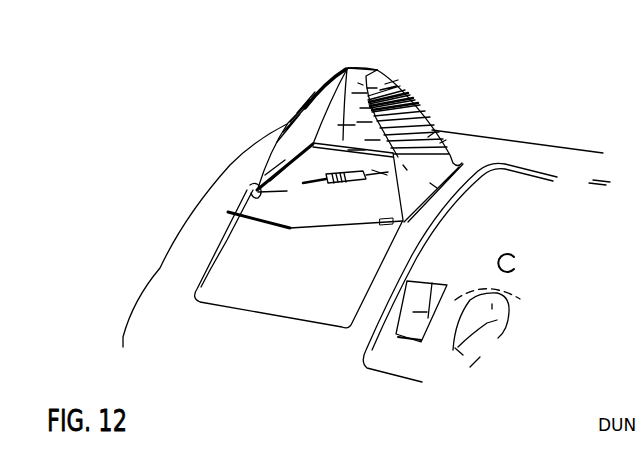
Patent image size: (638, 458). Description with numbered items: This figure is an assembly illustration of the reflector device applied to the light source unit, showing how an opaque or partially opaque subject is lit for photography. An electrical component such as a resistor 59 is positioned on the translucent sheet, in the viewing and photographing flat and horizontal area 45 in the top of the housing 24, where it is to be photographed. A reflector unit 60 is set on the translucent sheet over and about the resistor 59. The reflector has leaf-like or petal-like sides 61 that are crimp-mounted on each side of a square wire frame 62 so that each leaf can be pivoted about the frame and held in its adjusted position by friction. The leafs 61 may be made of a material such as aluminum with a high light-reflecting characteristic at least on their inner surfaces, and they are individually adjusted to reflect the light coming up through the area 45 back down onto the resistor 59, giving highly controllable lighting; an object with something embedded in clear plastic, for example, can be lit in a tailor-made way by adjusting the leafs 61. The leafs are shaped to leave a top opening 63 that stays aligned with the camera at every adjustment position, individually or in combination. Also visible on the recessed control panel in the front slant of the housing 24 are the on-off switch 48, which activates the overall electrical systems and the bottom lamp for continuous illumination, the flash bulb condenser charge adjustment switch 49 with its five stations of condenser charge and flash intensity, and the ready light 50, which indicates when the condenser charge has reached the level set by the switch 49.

The housing 24 is at (177, 243).
The viewing and photographing flat and horizontal area 45 is at (253, 188).
The on-off switch 48 is at (396, 334).
The flash bulb condenser charge adjustment switch 49 is at (497, 328).
The ready light 50 is at (520, 256).
The resistor 59 is at (338, 175).
The reflector unit 60 is at (400, 66).
The reflector leafs 61 is at (284, 123).
The square wire frame 62 is at (330, 72).
The top opening 63 is at (354, 56).